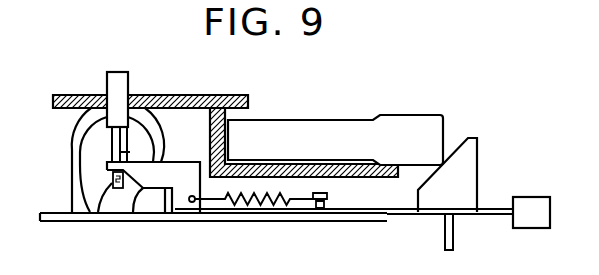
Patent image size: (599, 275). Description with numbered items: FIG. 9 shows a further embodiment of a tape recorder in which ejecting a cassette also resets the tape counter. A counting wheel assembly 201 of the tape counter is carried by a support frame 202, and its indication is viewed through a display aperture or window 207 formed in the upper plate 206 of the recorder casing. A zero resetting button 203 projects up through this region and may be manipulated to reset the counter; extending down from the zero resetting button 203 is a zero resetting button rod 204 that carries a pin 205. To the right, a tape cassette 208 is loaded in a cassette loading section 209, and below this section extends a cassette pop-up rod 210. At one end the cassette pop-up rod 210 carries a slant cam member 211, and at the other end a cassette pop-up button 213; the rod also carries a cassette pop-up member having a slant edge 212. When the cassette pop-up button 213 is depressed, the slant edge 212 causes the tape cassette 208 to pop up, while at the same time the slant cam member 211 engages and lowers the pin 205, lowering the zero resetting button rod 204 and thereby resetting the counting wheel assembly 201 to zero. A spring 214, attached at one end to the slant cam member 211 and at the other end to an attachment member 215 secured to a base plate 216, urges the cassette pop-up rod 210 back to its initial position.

The counting wheel assembly 201 is at (72, 143).
The support frame 202 is at (82, 184).
The zero resetting button 203 is at (147, 62).
The zero resetting button rod 204 is at (131, 152).
The pin 205 is at (90, 228).
The upper plate 206 is at (173, 72).
The display aperture or window 207 is at (107, 95).
The tape cassette 208 is at (358, 130).
The cassette loading section 209 is at (253, 113).
The cassette pop-up rod 210 is at (389, 216).
The slant cam member 211 is at (138, 220).
The slant edge 212 is at (445, 142).
The cassette pop-up button 213 is at (532, 220).
The spring 214 is at (290, 206).
The attachment member 215 is at (322, 218).
The base plate 216 is at (183, 221).